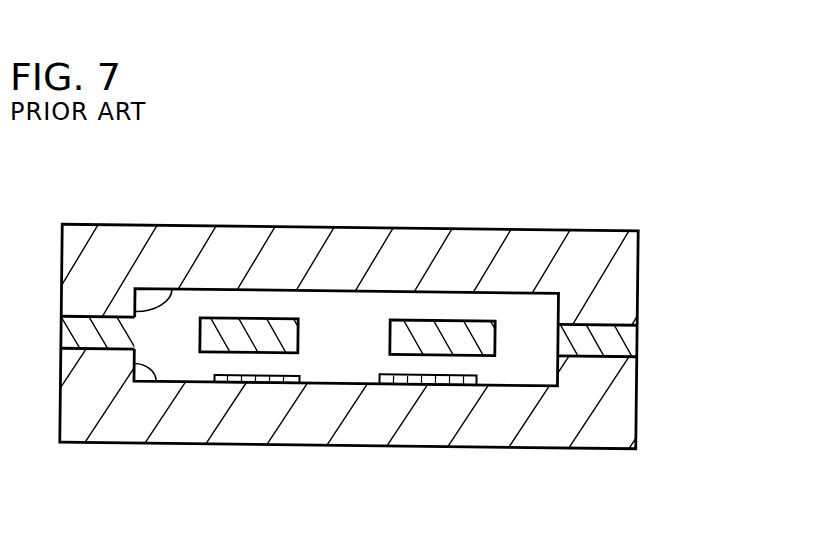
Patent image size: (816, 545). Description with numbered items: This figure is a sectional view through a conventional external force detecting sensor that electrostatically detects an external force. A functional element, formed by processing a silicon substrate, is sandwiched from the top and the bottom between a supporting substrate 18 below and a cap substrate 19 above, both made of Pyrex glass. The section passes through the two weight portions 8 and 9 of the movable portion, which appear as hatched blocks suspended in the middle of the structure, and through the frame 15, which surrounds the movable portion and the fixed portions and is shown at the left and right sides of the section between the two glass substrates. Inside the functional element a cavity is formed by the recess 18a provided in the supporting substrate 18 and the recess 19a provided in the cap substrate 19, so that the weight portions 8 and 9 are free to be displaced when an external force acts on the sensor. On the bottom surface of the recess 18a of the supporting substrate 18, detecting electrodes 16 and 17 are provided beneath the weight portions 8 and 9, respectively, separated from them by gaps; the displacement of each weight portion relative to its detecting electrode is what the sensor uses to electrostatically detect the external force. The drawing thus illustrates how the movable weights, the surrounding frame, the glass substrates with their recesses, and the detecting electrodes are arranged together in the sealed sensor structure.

The weight portion 8 is at (262, 333).
The weight portion 9 is at (432, 328).
The frame 15 is at (630, 340).
The detecting electrode 16 is at (288, 378).
The detecting electrode 17 is at (390, 372).
The supporting substrate 18 is at (553, 440).
The recess 18a is at (156, 382).
The cap substrate 19 is at (533, 257).
The recess 19a is at (170, 289).